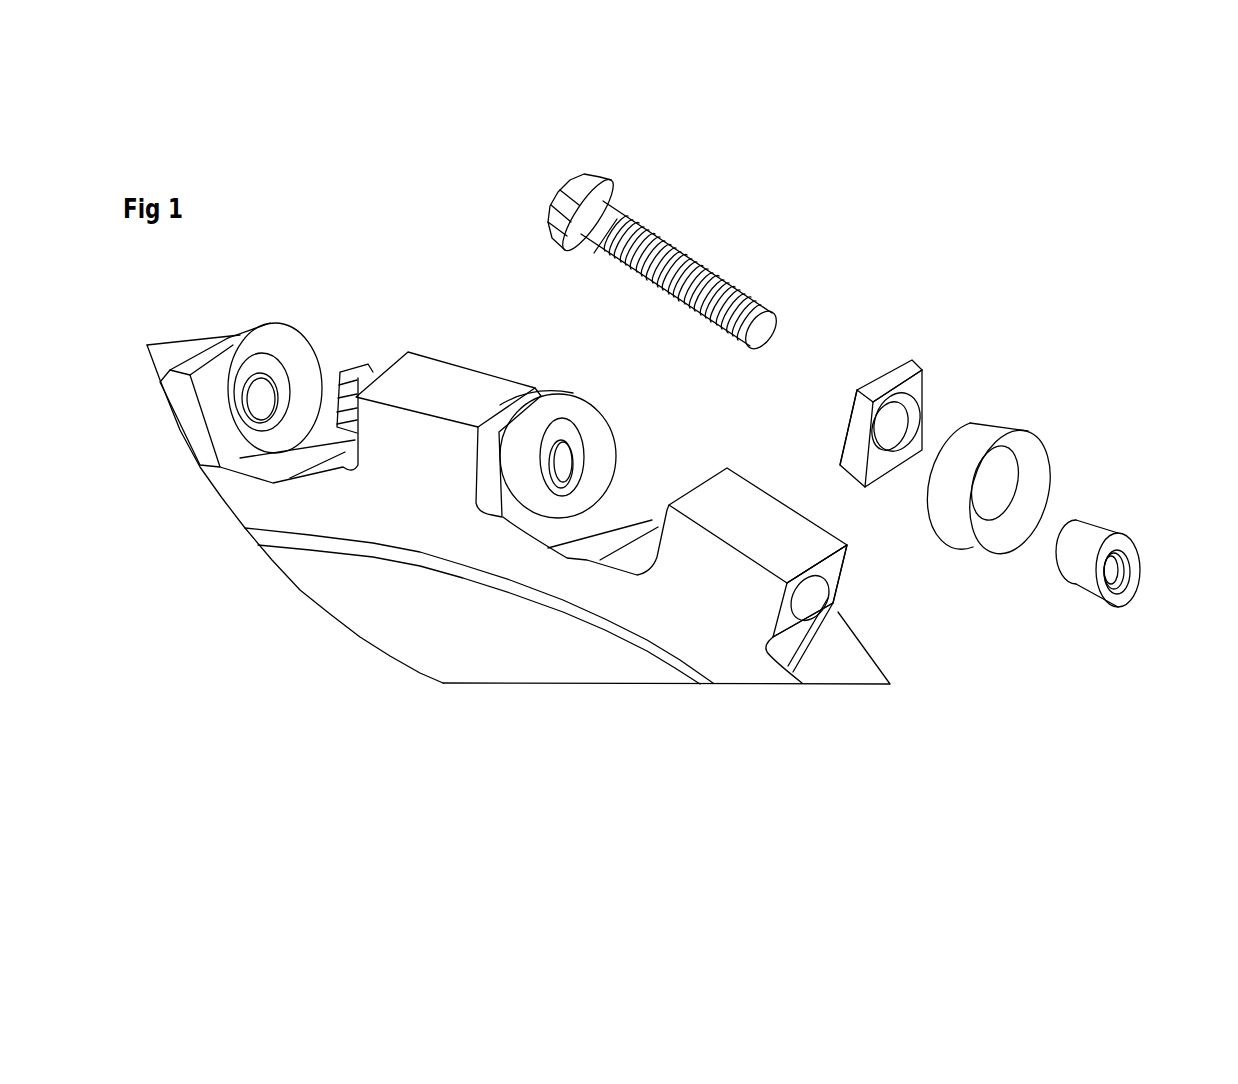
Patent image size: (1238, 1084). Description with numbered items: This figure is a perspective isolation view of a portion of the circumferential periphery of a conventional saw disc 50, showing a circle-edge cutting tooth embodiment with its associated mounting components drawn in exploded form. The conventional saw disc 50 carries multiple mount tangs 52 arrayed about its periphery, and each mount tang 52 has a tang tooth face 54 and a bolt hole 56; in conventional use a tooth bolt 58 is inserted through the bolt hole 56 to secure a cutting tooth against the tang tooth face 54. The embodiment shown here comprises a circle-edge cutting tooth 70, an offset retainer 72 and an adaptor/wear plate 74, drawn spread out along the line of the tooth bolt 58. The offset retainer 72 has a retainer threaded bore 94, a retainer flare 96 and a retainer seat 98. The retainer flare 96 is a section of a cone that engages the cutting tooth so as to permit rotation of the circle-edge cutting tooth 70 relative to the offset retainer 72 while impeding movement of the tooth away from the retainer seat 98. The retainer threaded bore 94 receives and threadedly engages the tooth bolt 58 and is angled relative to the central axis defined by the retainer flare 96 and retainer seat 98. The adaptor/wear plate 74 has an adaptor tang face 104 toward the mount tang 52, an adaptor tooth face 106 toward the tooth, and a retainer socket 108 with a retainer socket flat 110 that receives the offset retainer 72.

The conventional saw disc 50 is at (426, 690).
The mount tang 52 is at (465, 348).
The tang tooth face 54 is at (833, 567).
The bolt hole 56 is at (812, 598).
The tooth bolt 58 is at (620, 207).
The circle-edge cutting tooth 70 is at (1017, 427).
The offset retainer 72 is at (1104, 545).
The adaptor/wear plate 74 is at (953, 301).
The retainer threaded bore 94 is at (1128, 568).
The retainer flare 96 is at (1078, 585).
The retainer seat 98 is at (1063, 582).
The adaptor tang face 104 is at (884, 375).
The adaptor tooth face 106 is at (918, 380).
The retainer socket 108 is at (907, 422).
The retainer socket flat 110 is at (935, 435).